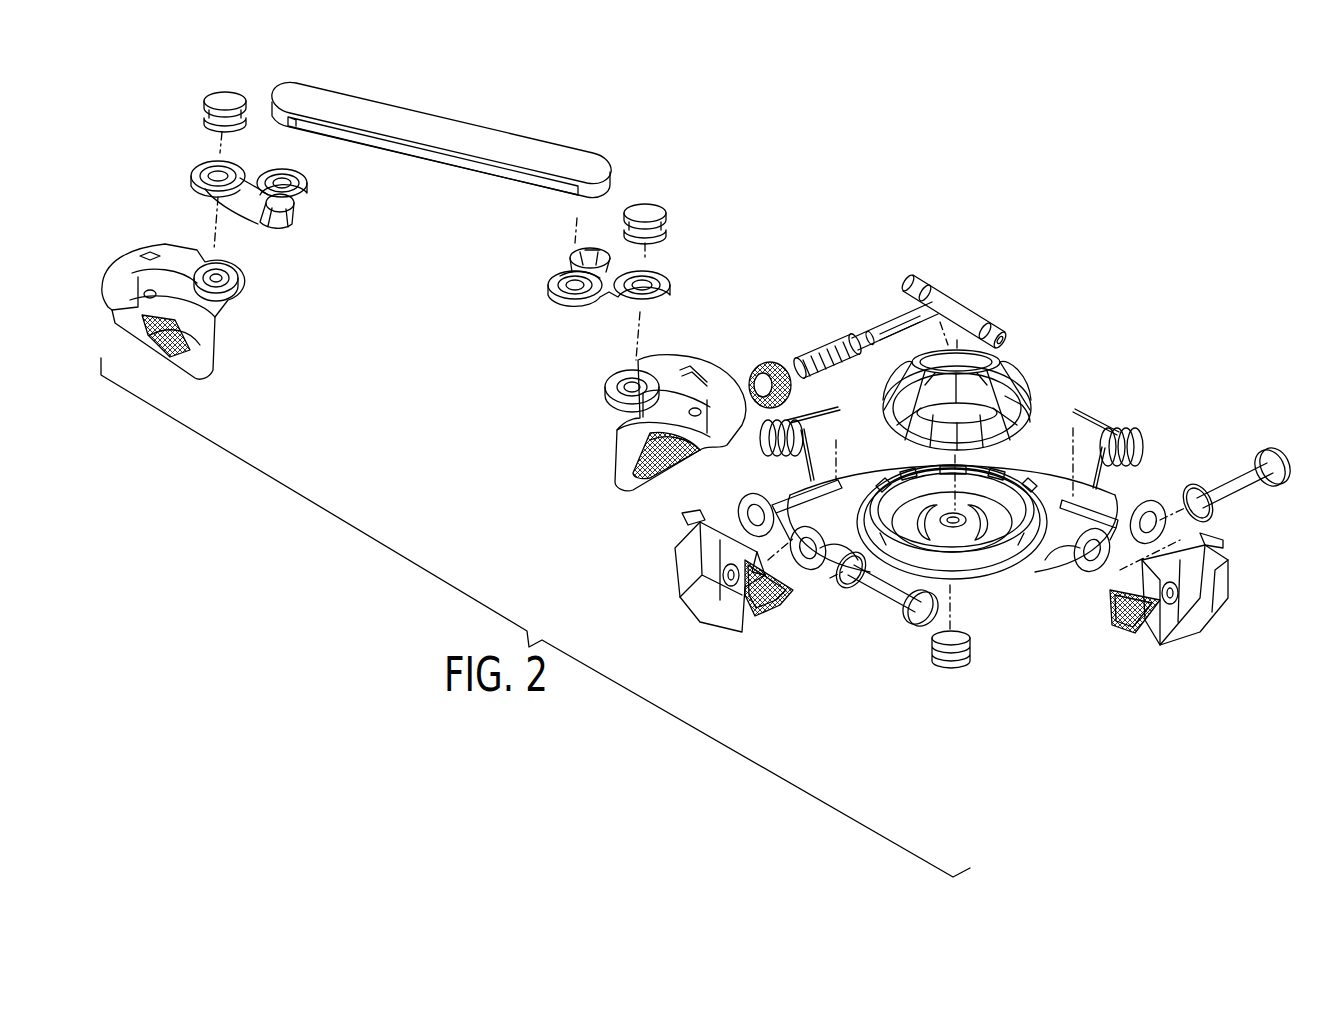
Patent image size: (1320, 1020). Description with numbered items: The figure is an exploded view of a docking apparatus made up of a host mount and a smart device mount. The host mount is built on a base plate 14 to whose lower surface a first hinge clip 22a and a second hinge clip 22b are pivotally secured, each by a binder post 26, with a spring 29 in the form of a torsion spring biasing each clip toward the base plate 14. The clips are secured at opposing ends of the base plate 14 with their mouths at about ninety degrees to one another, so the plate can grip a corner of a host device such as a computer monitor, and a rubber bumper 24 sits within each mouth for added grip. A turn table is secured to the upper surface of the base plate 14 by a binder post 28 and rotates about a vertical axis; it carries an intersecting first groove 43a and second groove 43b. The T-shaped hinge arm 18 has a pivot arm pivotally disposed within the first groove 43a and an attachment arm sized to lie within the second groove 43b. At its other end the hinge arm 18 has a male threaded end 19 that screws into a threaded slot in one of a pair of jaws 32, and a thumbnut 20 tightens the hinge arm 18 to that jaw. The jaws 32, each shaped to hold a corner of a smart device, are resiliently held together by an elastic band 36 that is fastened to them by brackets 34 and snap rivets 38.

The base plate 14 is at (975, 585).
The hinge arm 18 is at (935, 300).
The male threaded end 19 is at (812, 352).
The thumbnut 20 is at (763, 372).
The first hinge clip 22a is at (690, 560).
The second hinge clip 22b is at (1217, 580).
The rubber bumper 24 is at (778, 612).
The binder post 26 is at (1245, 490).
The binder post 28 is at (955, 665).
The spring 29 is at (800, 417).
The jaws 32 is at (125, 265).
The brackets 34 is at (270, 226).
The band 36 is at (432, 122).
The snap rivets 38 is at (222, 101).
The first groove 43a is at (1022, 405).
The second groove 43b is at (897, 432).